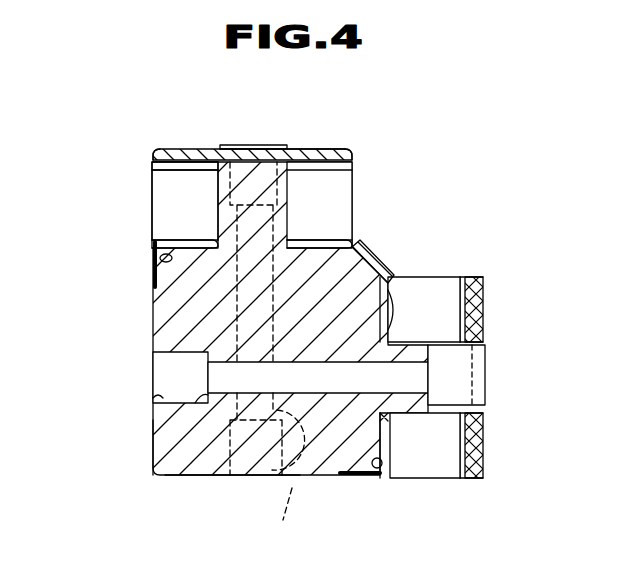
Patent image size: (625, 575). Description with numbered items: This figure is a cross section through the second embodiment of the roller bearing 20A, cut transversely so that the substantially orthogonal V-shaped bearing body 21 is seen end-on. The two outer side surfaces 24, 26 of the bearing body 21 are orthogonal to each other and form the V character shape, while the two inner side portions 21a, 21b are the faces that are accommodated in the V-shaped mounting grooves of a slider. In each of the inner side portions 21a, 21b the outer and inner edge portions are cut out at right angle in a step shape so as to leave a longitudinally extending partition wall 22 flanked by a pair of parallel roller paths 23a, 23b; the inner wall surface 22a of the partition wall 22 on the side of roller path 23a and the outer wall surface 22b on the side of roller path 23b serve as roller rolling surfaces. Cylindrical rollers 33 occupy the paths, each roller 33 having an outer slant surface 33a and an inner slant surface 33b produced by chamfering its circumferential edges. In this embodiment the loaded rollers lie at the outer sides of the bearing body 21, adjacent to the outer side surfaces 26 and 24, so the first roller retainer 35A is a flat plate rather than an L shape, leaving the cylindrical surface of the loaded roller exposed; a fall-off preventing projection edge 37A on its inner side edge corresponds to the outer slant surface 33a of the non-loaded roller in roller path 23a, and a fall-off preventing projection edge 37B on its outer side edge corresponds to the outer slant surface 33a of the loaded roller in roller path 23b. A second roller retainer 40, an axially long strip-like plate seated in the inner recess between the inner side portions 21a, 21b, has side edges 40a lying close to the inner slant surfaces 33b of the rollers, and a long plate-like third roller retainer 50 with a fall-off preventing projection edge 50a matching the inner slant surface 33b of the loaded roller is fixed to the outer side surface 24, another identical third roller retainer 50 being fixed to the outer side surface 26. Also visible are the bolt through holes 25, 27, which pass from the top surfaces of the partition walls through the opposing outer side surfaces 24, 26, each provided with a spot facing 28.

The roller bearing 20A is at (463, 180).
The bearing body 21 is at (180, 468).
The inner side portion 21a is at (487, 353).
The inner side portion 21b is at (245, 147).
The partition wall 22 is at (214, 158).
The inner wall surface 22a is at (355, 188).
The outer wall surface 22b is at (196, 150).
The roller path 23a is at (373, 218).
The roller path 23b is at (152, 241).
The outer side surface 24 is at (152, 355).
The bolt through hole 25 is at (170, 423).
The outer side surface 26 is at (207, 478).
The bolt through hole 27 is at (267, 354).
The spot facing 28 is at (157, 399).
The cylindrical roller 33 is at (152, 216).
The outer slant surface 33a is at (148, 170).
The inner slant surface 33b is at (152, 257).
The first roller retainer 35A is at (300, 152).
The fall-off preventing projection edge 37A is at (355, 160).
The fall-off preventing projection edge 37B is at (152, 156).
The second roller retainer 40 is at (368, 258).
The side edge 40a is at (410, 280).
The third roller retainer 50 is at (156, 289).
The fall-off preventing projection edge 50a is at (160, 262).